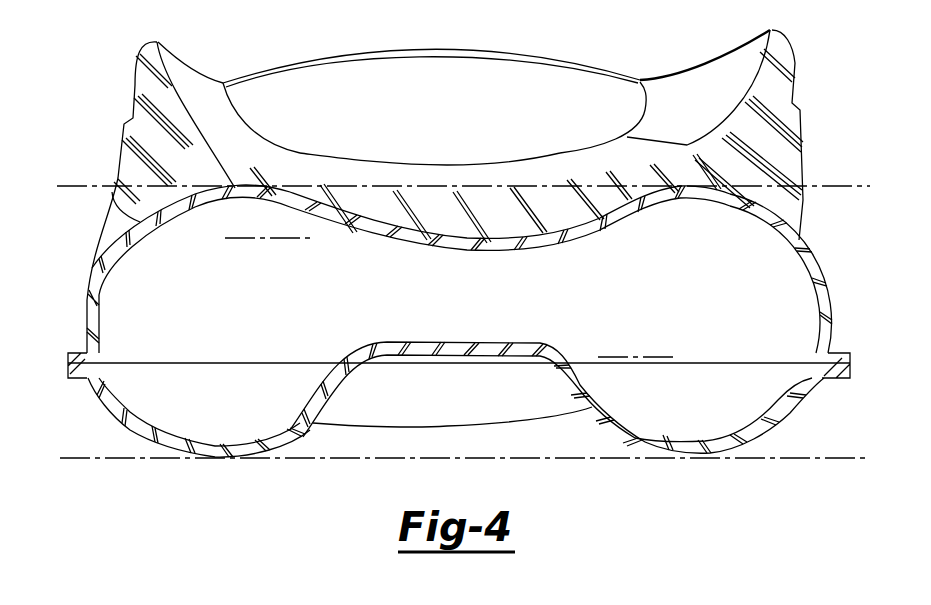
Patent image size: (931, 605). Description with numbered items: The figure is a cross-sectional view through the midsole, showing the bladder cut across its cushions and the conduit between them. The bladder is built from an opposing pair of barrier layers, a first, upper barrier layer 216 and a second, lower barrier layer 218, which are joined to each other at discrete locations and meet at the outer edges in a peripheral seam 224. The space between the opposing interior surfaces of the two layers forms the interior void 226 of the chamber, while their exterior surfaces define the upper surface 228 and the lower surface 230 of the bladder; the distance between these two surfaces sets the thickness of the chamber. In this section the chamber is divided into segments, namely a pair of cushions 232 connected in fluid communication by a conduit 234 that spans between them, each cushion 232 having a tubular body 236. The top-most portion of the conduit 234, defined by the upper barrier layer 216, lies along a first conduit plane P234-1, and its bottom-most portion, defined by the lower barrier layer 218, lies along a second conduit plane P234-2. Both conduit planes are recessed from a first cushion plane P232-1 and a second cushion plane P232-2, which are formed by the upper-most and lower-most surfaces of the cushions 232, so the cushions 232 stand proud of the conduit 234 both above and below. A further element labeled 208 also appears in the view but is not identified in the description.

The housing assembly 208 is at (465, 305).
The upper barrier layer 216 is at (465, 271).
The lower barrier layer 218 is at (492, 439).
The peripheral seam 224 is at (850, 358).
The interior void 226 is at (333, 283).
The upper surface 228 is at (235, 188).
The lower surface 230 is at (220, 458).
The cushions 232 is at (90, 275).
The conduits 234 is at (432, 239).
The tubular body 236 is at (110, 233).
The first cushion plane P232-1 is at (82, 185).
The second cushion plane P232-2 is at (80, 460).
The first conduit plane P234-1 is at (250, 240).
The second conduit plane P234-2 is at (653, 302).